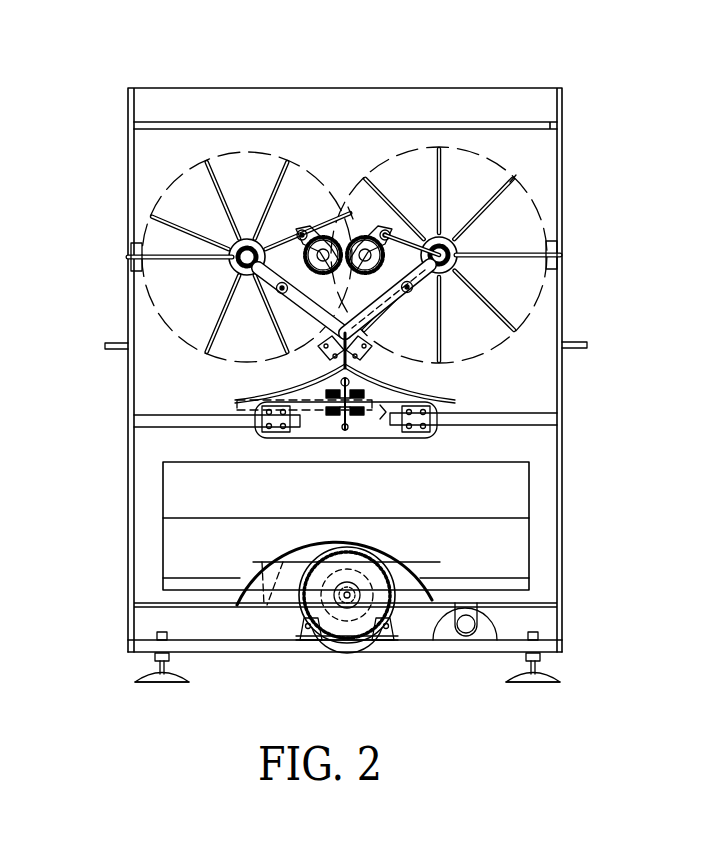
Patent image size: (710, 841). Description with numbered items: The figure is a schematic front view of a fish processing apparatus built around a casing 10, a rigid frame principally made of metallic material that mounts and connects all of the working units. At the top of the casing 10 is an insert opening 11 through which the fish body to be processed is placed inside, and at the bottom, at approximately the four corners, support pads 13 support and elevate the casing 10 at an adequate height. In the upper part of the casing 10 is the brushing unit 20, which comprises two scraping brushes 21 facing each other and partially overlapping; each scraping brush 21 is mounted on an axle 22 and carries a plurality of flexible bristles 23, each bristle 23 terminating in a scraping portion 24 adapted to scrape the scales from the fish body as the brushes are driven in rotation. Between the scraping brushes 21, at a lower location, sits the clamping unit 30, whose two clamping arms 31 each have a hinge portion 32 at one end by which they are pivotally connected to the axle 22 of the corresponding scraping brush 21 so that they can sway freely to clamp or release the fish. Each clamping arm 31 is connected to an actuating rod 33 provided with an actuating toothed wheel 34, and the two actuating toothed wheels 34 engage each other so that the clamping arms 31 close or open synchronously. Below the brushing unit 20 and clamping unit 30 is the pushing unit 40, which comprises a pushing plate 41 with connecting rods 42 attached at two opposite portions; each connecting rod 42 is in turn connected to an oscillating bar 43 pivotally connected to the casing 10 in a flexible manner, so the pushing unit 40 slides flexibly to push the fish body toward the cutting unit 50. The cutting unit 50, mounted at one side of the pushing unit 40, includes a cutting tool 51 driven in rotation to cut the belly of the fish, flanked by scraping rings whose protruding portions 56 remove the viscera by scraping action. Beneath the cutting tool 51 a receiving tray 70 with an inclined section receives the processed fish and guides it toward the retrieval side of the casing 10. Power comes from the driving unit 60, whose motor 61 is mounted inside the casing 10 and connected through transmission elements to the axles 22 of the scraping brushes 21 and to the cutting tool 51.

The casing 10 is at (178, 88).
The insert opening 11 is at (350, 107).
The support pads 13 is at (550, 675).
The brushing unit 20 is at (341, 197).
The scraping brush 21 is at (142, 215).
The axle 22 is at (462, 262).
The flexible bristles 23 is at (477, 200).
The scraping portion 24 is at (518, 175).
The clamping unit 30 is at (393, 214).
The clamping arm 31 is at (300, 312).
The hinge portion 32 is at (452, 290).
The actuating rod 33 is at (352, 242).
The actuating toothed wheel 34 is at (340, 232).
The pushing unit 40 is at (240, 436).
The pushing plate 41 is at (360, 428).
The connecting rod 42 is at (500, 420).
The oscillating bar 43 is at (562, 365).
The cutting unit 50 is at (355, 432).
The cutting tool 51 is at (349, 430).
The protruding portions 56 is at (340, 422).
The driving unit 60 is at (277, 655).
The motor 61 is at (352, 610).
The receiving tray 70 is at (200, 555).